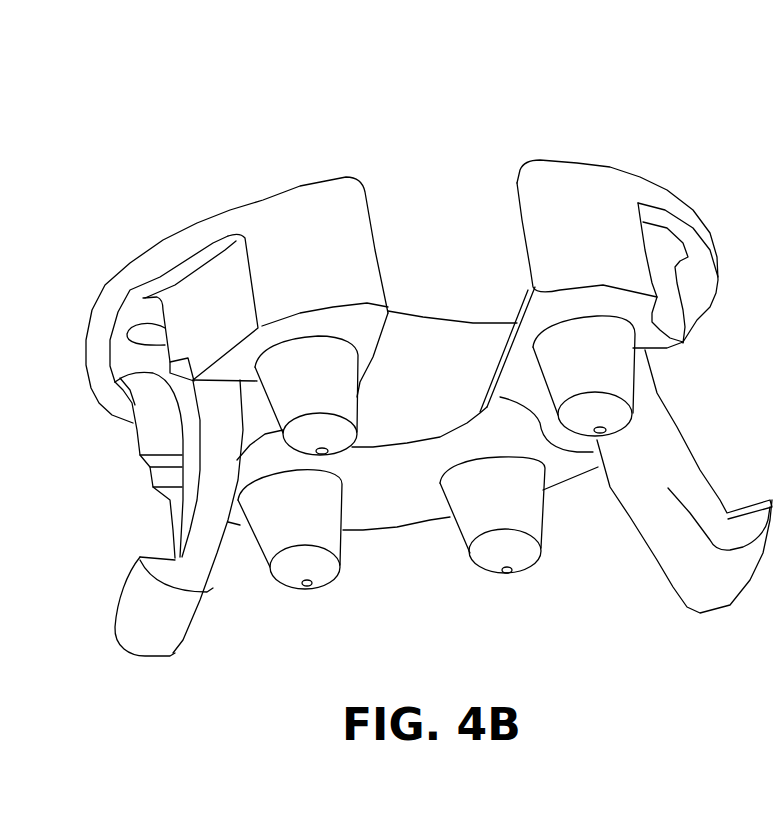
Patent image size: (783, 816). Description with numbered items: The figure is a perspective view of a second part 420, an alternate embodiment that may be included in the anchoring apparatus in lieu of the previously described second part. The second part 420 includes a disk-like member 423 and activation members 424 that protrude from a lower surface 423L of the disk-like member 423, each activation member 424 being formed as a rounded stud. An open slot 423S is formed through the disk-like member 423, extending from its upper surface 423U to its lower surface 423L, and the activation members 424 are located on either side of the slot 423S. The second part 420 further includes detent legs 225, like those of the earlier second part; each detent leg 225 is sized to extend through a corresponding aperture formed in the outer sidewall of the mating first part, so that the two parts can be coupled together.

The second part 420 is at (420, 80).
The disk-like member 423 is at (93, 278).
The upper surface 423U is at (300, 180).
The lower surface 423L is at (363, 500).
The open slot 423S is at (421, 276).
The activation members 424 is at (303, 342).
The detent legs 225 is at (171, 551).